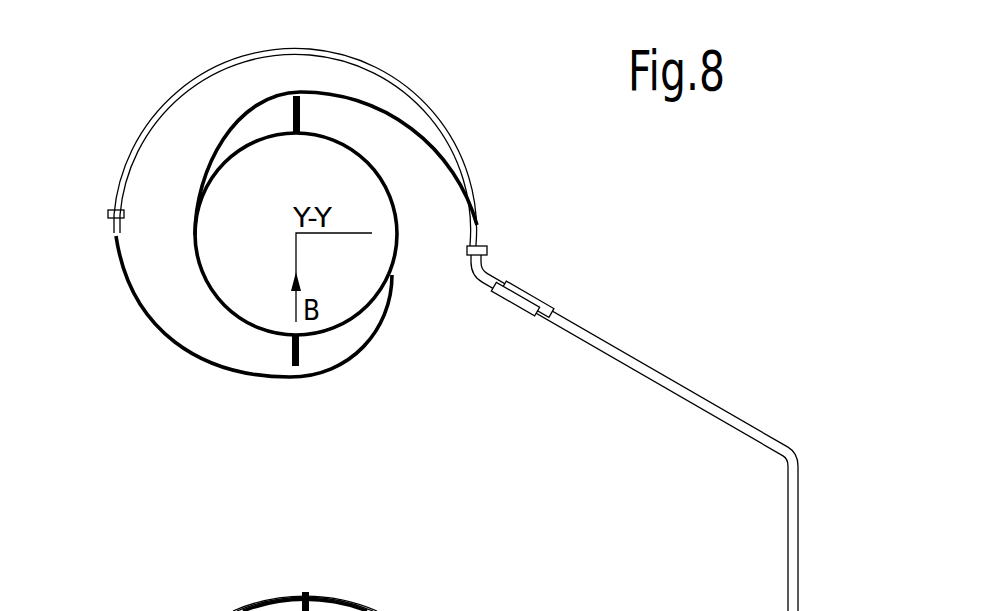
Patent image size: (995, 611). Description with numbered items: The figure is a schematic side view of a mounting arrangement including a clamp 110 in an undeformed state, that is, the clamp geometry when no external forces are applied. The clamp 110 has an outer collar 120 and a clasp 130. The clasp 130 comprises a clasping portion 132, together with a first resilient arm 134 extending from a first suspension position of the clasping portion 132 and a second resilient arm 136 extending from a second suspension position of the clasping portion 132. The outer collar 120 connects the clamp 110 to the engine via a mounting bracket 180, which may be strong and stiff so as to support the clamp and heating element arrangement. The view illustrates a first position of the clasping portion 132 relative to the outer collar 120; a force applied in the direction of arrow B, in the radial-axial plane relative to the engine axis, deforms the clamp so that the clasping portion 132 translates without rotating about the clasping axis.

The clamp 110 is at (291, 327).
The outer collar 120 is at (448, 127).
The clasp 130 is at (296, 248).
The clasping portion 132 is at (397, 200).
The first resilient arm 134 is at (388, 110).
The second resilient arm 136 is at (182, 340).
The mounting bracket 180 is at (786, 543).